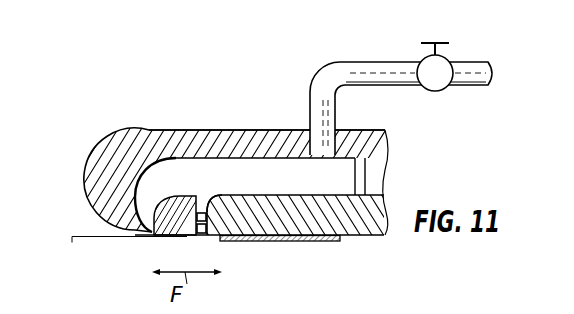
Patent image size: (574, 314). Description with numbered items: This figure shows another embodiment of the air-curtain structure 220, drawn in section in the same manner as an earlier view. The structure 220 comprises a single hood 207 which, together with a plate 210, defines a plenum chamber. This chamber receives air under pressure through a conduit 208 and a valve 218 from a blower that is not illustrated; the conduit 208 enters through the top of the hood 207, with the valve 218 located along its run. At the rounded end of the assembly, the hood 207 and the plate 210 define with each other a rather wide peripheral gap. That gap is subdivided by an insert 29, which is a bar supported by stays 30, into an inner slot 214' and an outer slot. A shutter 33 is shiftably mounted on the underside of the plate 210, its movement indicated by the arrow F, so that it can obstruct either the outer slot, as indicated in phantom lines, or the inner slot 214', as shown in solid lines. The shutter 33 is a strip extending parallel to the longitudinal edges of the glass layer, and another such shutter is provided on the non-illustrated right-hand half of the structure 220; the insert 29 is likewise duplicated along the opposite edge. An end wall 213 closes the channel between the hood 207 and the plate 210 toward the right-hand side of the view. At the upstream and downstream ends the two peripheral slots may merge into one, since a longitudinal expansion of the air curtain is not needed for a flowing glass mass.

The hood 207 is at (103, 159).
The structure 220 is at (157, 128).
The plate 210 is at (363, 222).
The inner slot 214' is at (262, 199).
The end wall 213 is at (362, 172).
The insert 29 is at (173, 198).
The stays 30 is at (205, 215).
The shutter 33 is at (72, 242).
The conduit 208 is at (331, 80).
The valve 218 is at (441, 86).